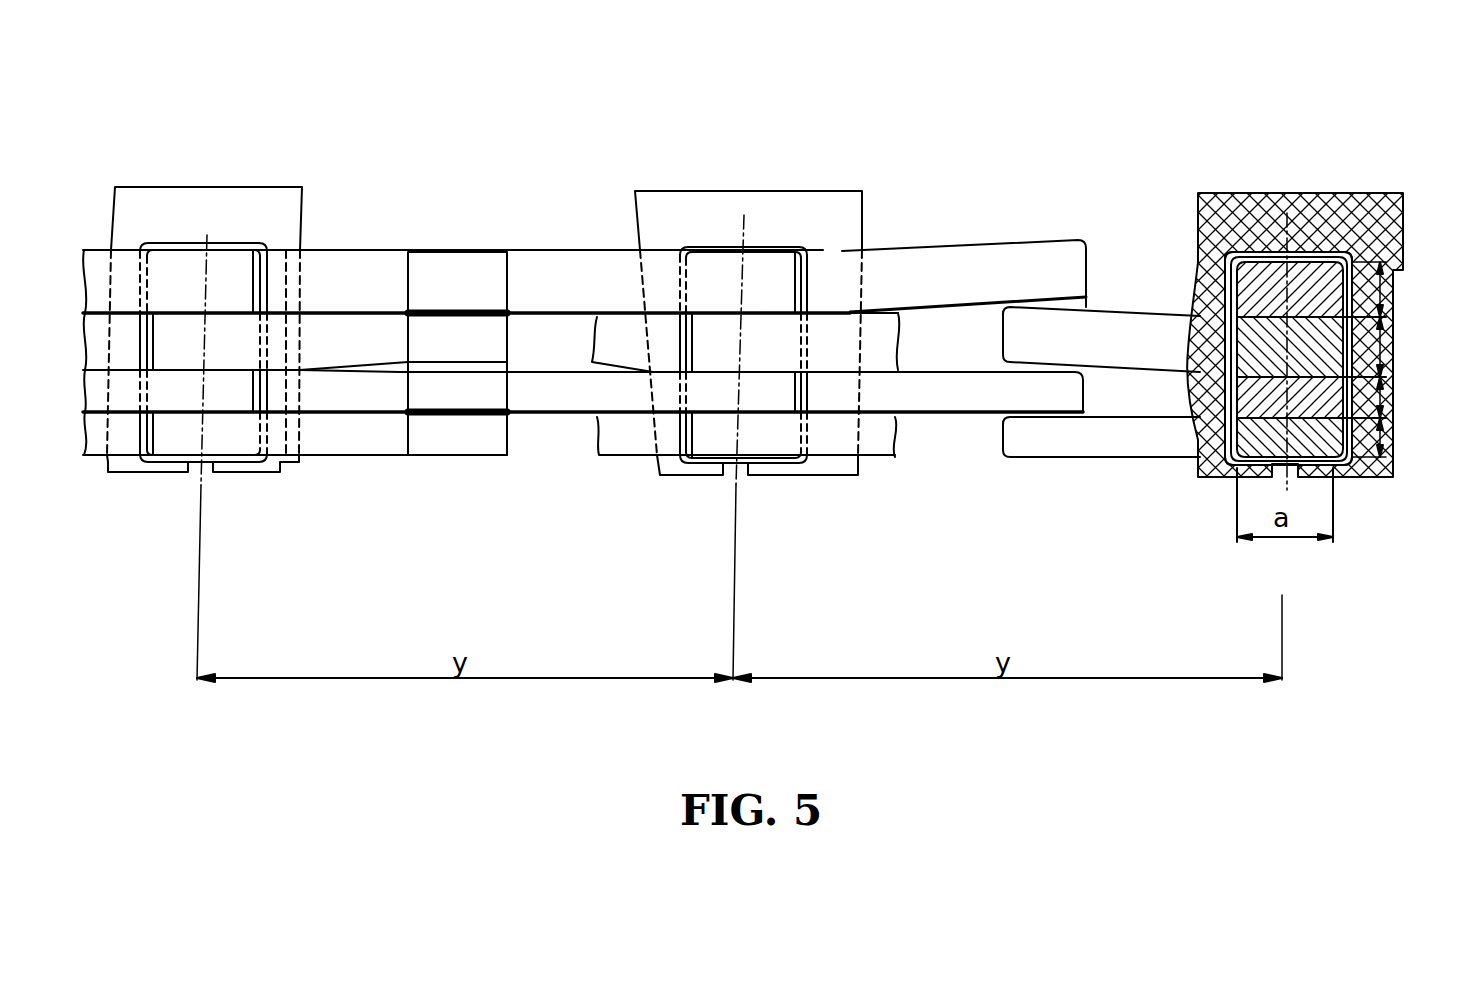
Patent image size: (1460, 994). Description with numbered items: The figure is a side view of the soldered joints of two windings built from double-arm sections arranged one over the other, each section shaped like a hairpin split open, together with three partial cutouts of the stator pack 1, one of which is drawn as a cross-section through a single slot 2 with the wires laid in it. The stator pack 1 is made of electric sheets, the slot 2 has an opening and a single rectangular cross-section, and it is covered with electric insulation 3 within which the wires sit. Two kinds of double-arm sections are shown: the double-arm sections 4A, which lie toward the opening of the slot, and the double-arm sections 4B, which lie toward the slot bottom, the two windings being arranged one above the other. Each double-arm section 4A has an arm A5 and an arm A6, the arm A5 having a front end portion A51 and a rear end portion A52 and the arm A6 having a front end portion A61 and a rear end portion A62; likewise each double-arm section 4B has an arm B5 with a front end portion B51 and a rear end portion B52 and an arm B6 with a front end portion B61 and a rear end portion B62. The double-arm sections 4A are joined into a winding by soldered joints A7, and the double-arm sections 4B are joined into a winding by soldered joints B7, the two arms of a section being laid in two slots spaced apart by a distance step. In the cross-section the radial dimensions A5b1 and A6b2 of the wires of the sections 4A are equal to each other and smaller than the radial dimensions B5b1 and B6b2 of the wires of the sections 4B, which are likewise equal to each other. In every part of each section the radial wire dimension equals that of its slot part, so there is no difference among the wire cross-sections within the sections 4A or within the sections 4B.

The stator pack 1 is at (1373, 233).
The slot 2 is at (1330, 243).
The electric insulation 3 is at (1297, 255).
The double-arm section 4A is at (748, 493).
The double-arm section 4B is at (734, 213).
The arm of double-arm section 4A A5 is at (1313, 435).
The arm of double-arm section 4A A6 is at (1268, 398).
The soldered joint A7 is at (430, 417).
The front end portion of arm A5 A51 is at (327, 437).
The rear end portion of arm A5 A52 is at (1115, 440).
The front end portion of arm A6 A61 is at (558, 388).
The rear end portion of arm A6 A62 is at (948, 390).
The arm of double-arm section 4B B5 is at (1263, 350).
The arm of double-arm section 4B B6 is at (1275, 290).
The soldered joint B7 is at (467, 310).
The front end portion of arm B5 B51 is at (290, 338).
The rear end portion of arm B5 B52 is at (1139, 340).
The front end portion of arm B6 B61 is at (102, 280).
The rear end portion of arm B6 B62 is at (966, 275).
The radial dimension of wire cross-section of arm B6 B6b2 is at (1414, 289).
The radial dimension of wire cross-section of arm B5 B5b1 is at (1414, 347).
The radial dimension of wire cross-section of arm A6 A6b2 is at (1414, 397).
The radial dimension of wire cross-section of arm A5 A5b1 is at (1414, 437).